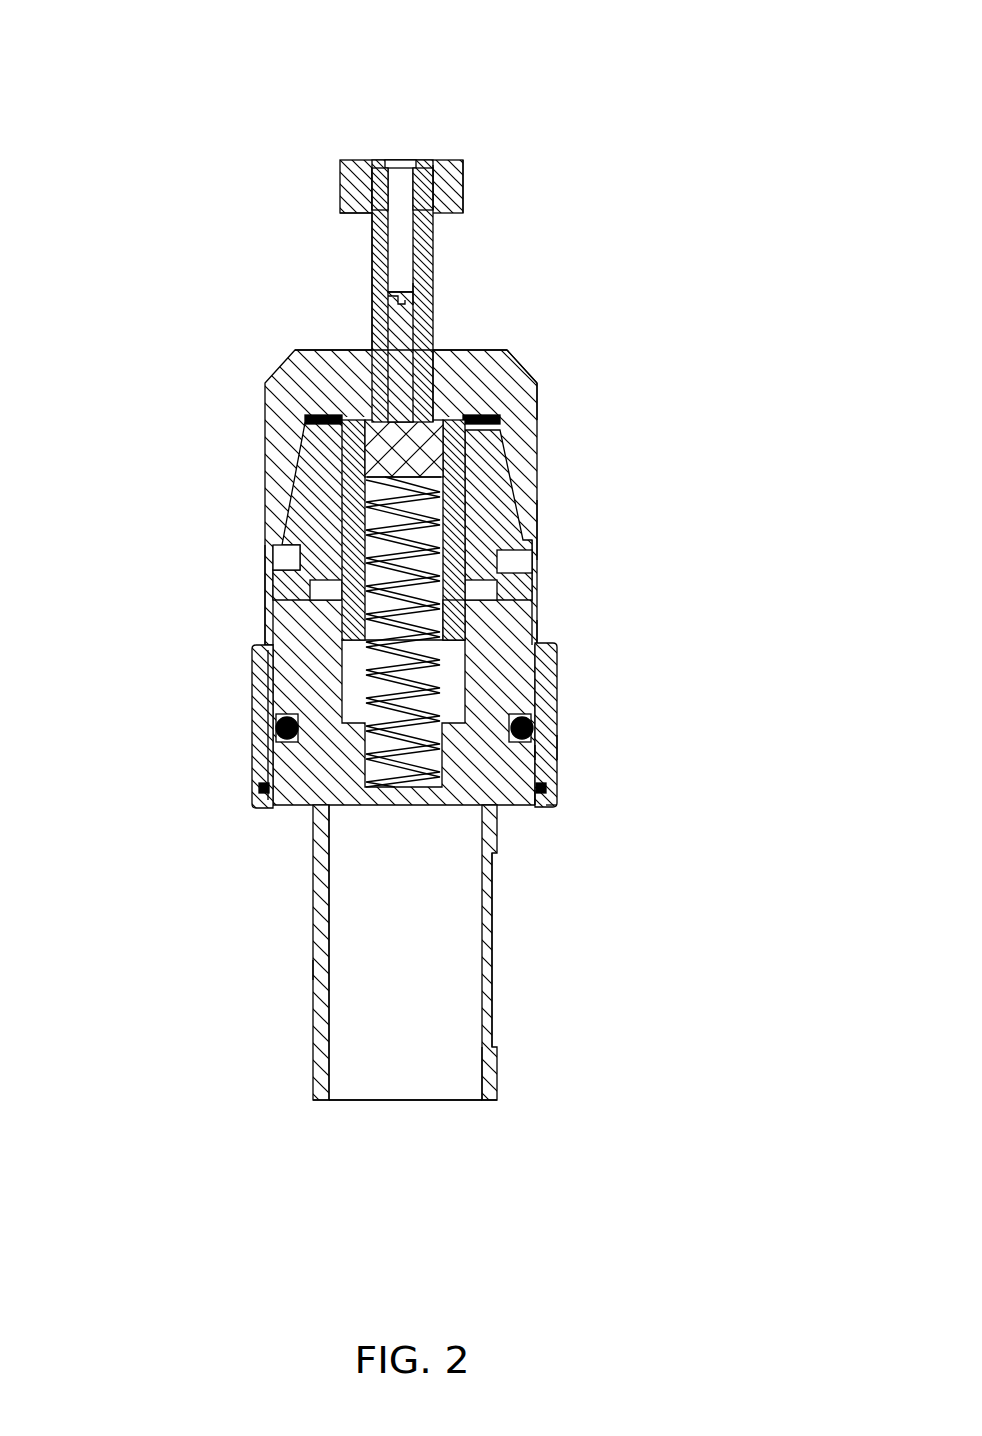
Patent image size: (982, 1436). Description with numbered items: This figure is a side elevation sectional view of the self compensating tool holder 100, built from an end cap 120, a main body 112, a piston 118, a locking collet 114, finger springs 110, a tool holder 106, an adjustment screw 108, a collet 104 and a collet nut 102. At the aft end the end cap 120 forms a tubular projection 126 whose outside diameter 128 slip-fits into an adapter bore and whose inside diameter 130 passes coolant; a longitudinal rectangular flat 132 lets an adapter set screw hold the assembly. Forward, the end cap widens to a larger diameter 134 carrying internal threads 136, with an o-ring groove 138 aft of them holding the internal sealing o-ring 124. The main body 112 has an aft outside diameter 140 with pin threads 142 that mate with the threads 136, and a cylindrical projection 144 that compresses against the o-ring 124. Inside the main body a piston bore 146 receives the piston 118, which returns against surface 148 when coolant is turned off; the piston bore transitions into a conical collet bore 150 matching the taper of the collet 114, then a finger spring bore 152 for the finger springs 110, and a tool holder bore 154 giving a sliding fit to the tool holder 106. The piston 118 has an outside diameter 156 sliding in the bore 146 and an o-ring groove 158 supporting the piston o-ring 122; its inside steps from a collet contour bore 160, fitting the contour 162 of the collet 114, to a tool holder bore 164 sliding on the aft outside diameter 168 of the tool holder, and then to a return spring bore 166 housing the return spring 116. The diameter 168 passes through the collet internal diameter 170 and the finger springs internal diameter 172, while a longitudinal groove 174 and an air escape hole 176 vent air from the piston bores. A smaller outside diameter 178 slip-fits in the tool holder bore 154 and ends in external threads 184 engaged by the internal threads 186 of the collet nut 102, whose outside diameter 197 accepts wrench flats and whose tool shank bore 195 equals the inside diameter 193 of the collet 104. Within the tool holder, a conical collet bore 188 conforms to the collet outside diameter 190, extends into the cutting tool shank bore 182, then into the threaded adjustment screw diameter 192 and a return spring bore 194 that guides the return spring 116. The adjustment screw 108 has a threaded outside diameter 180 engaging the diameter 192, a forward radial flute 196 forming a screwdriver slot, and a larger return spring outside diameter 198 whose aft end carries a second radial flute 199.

The self compensating tool holder 100 is at (313, 972).
The collet nut 102 is at (466, 163).
The collet 104 is at (474, 181).
The tool holder 106 is at (433, 262).
The adjustment screw 108 is at (416, 338).
The finger springs 110 is at (515, 385).
The main body 112 is at (538, 498).
The locking collet 114 is at (538, 532).
The return spring 116 is at (497, 590).
The piston 118 is at (556, 676).
The end cap 120 is at (252, 737).
The piston o-ring 122 is at (541, 750).
The internal sealing o-ring 124 is at (264, 795).
The tubular projection 126 is at (403, 1100).
The outside diameter 128 is at (497, 1100).
The inside diameter 130 is at (332, 1018).
The longitudinal rectangular flat 132 is at (492, 990).
The larger diameter 134 is at (558, 796).
The internal threads 136 is at (530, 725).
The o-ring groove 138 is at (550, 796).
The aft outside diameter 140 is at (537, 630).
The pin threads 142 is at (547, 746).
The cylindrical projection 144 is at (543, 806).
The piston bore 146 is at (530, 560).
The surface 148 is at (478, 806).
The conical collet bore 150 is at (545, 398).
The finger spring bore 152 is at (522, 376).
The tool holder bore 154 is at (433, 352).
The piston outside diameter 156 is at (272, 687).
The o-ring groove 158 is at (540, 700).
The collet contour bore 160 is at (538, 584).
The contour 162 is at (295, 550).
The tool holder bore 164 is at (538, 652).
The return spring bore 166 is at (416, 798).
The aft outside diameter 168 is at (350, 586).
The collet internal diameter 170 is at (340, 500).
The finger springs internal diameter 172 is at (312, 420).
The longitudinal groove 174 is at (500, 510).
The air escape hole 176 is at (500, 422).
The smaller outside diameter 178 is at (433, 283).
The threaded outside diameter 180 is at (433, 305).
The cutting tool shank bore 182 is at (352, 210).
The external threads 184 is at (470, 198).
The internal threads 186 is at (440, 165).
The collet bore 188 is at (372, 168).
The collet outside diameter 190 is at (432, 172).
The threaded adjustment screw diameter 192 is at (390, 345).
The collet inside diameter 193 is at (383, 172).
The return spring bore 194 is at (335, 569).
The collet nut tool shank bore 195 is at (393, 162).
The radial flute 196 is at (382, 326).
The collet nut outside diameter 197 is at (470, 170).
The return spring outside diameter 198 is at (325, 415).
The radial flute 199 is at (362, 417).